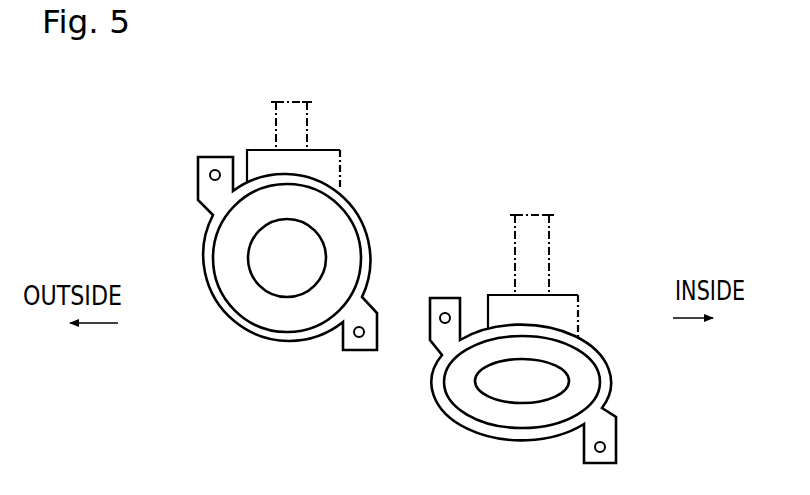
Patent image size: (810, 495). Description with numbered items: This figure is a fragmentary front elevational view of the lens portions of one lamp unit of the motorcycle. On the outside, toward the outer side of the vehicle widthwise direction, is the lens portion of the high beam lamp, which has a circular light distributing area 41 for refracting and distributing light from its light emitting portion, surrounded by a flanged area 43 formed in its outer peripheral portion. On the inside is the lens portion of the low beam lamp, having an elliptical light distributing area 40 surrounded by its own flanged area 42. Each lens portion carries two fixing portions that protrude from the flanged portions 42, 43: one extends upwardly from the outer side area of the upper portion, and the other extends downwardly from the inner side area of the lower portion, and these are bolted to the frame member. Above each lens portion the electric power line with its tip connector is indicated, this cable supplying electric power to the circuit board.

The flanged area 43 is at (343, 203).
The light distributing area 41 is at (328, 228).
The flanged area 42 is at (558, 335).
The light distributing area 40 is at (573, 365).